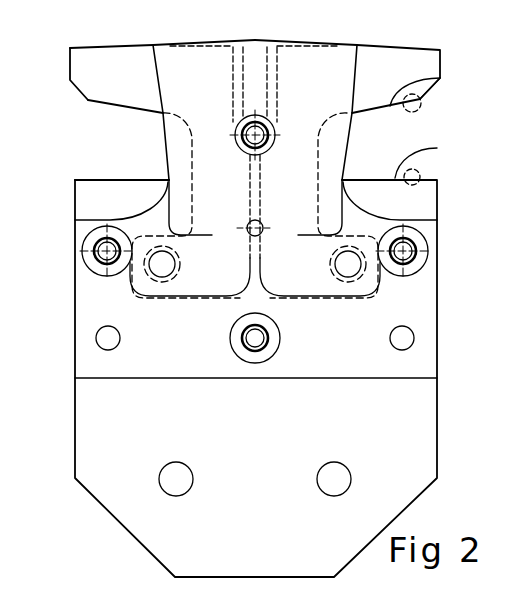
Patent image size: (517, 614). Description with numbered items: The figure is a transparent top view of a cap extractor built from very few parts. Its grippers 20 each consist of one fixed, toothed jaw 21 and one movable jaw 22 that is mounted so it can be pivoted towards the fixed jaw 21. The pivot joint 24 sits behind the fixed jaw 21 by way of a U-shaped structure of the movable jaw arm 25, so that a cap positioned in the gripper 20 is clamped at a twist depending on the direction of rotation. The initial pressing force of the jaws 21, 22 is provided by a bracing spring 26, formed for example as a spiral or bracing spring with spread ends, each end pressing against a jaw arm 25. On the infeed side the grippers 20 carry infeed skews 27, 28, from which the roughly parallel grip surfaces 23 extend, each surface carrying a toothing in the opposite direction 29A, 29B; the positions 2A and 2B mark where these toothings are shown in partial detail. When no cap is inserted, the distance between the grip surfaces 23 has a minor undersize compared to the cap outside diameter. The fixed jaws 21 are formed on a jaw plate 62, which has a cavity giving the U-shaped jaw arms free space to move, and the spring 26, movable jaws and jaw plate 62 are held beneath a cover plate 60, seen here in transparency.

The gripper 20 is at (125, 62).
The fixed toothed jaw 21 is at (425, 193).
The movable jaw 22 is at (430, 92).
The grip surface 23 is at (440, 78).
The pivot joint 24 is at (313, 273).
The movable jaw arm 25 is at (350, 268).
The bracing spring 26 is at (248, 83).
The infeed skew 27 is at (78, 92).
The infeed skew 28 is at (87, 182).
The toothing 29A is at (107, 108).
The toothing 29B is at (103, 178).
The detail view position 2A is at (417, 110).
The detail view position 2B is at (420, 176).
The cover plate 60 is at (260, 40).
The jaw plate 62 is at (83, 203).